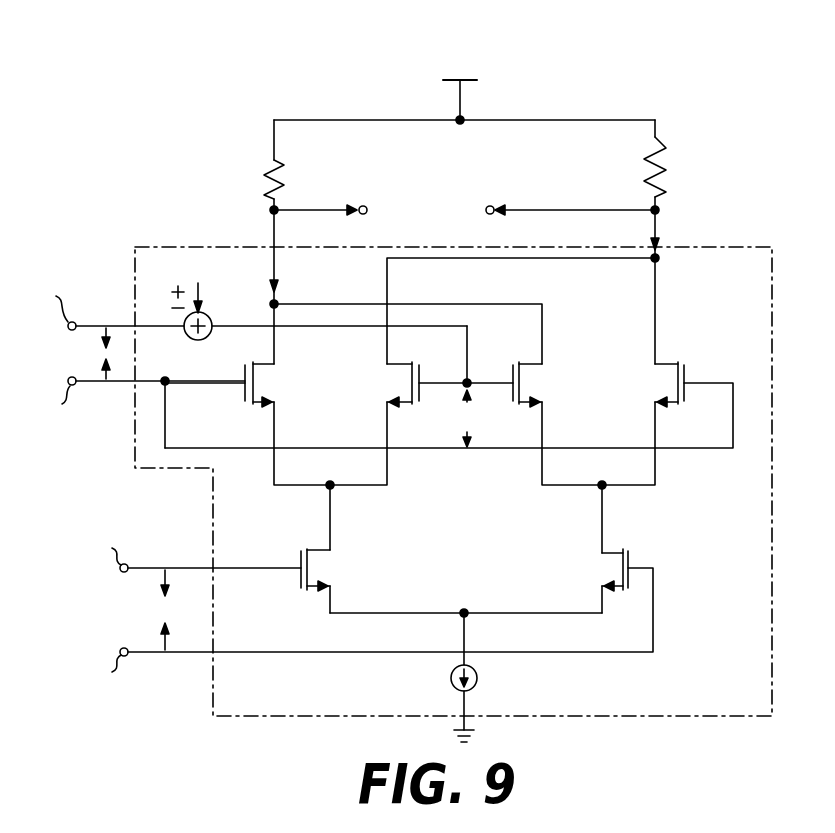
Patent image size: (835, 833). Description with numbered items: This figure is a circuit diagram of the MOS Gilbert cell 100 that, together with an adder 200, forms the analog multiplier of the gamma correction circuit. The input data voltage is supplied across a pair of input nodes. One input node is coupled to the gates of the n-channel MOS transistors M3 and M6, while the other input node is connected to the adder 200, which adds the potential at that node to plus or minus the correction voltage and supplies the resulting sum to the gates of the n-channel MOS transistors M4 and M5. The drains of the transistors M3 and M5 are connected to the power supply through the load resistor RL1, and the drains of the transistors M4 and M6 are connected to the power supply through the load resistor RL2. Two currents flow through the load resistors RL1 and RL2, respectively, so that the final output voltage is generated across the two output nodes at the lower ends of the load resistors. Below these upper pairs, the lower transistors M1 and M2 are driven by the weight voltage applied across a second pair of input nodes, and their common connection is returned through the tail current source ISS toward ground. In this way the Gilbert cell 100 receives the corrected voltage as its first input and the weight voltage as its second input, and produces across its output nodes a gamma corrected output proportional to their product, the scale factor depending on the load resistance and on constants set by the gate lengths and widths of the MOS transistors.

The MOS Gilbert cell 100 is at (612, 86).
The adder 200 is at (185, 321).
The n-channel MOS transistor M1 is at (322, 581).
The n-channel MOS transistor M2 is at (595, 581).
The n-channel MOS transistor M3 is at (227, 384).
The n-channel MOS transistor M4 is at (412, 384).
The n-channel MOS transistor M5 is at (512, 384).
The n-channel MOS transistor M6 is at (449, 405).
The load resistor RL1 is at (250, 165).
The load resistor RL2 is at (680, 165).
The tail current source ISS is at (483, 677).